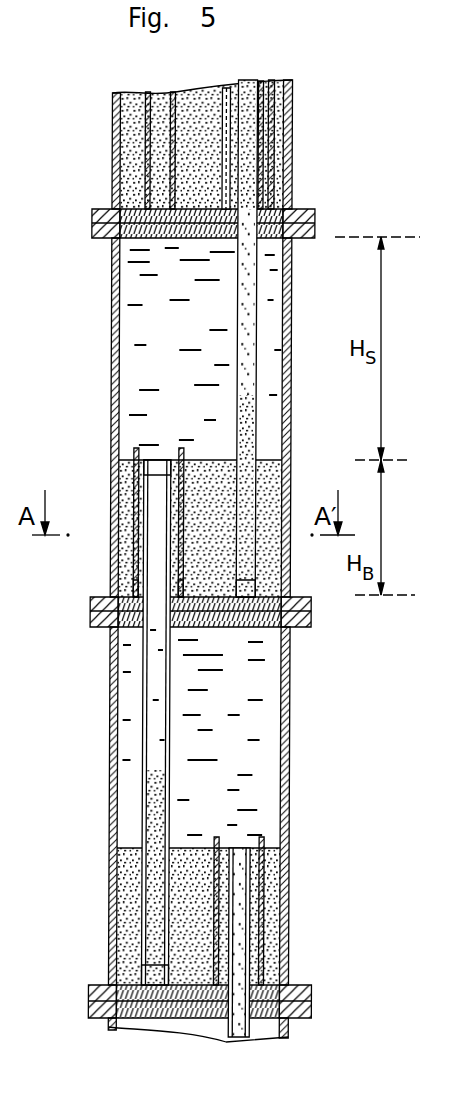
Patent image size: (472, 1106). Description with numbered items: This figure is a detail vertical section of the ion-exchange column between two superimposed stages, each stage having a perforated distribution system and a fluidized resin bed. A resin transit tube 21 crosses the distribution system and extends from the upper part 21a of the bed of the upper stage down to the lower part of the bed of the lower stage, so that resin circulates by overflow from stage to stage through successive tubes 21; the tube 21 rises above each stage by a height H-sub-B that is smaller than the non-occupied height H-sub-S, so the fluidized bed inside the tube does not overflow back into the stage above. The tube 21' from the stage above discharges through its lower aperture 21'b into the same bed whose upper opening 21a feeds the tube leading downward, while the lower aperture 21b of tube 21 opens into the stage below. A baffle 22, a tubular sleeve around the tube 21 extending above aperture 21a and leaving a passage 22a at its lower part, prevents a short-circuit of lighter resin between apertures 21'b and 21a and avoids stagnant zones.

The resin transit tube 21 is at (110, 722).
The upper part of the transit tube 21a is at (162, 458).
The lower aperture of the tube 21b is at (116, 958).
The transit tube from the upper stage 21' is at (285, 338).
The lower part of the tube from the upper stage 21'b is at (290, 584).
The baffle 22 is at (137, 498).
The passage for the resin 22a is at (136, 589).